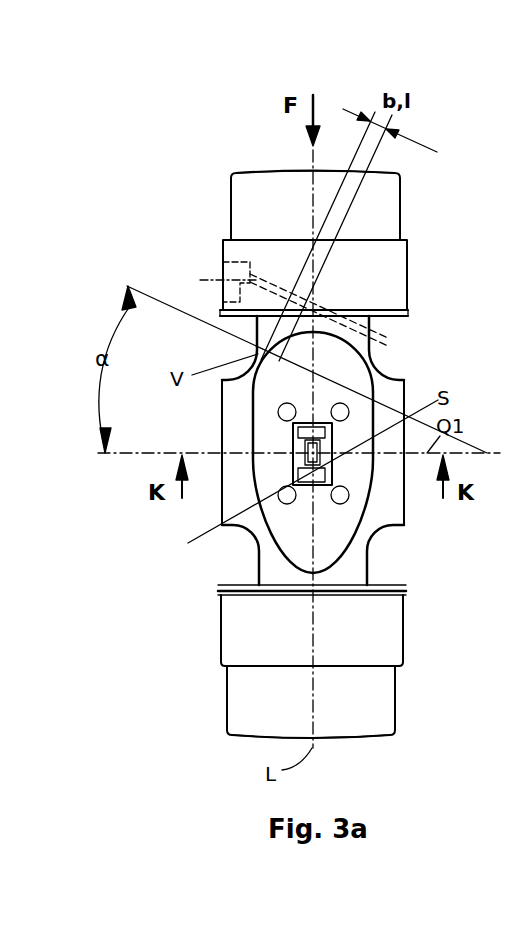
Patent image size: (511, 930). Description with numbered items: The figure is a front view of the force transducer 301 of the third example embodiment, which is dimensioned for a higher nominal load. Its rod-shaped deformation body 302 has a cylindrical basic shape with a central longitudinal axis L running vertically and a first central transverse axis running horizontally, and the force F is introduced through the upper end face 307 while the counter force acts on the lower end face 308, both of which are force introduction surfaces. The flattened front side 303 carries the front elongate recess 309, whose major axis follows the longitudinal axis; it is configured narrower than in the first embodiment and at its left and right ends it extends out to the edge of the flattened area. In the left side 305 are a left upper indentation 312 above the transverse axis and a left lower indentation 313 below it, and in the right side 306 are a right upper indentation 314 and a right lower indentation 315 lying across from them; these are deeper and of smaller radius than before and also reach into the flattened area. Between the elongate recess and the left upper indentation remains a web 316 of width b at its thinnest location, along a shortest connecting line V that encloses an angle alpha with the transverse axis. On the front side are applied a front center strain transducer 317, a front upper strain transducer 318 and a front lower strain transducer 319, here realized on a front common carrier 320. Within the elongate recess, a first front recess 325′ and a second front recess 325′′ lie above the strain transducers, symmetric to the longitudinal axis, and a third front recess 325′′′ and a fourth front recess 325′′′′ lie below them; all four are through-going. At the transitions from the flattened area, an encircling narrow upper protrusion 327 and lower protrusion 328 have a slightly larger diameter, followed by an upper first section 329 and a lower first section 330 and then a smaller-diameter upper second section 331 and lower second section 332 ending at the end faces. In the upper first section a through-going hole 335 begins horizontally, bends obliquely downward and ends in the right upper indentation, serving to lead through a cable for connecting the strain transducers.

The force transducer 301 is at (137, 151).
The deformation body 302 is at (224, 597).
The front side 303 is at (242, 632).
The left side 305 is at (222, 488).
The right side 306 is at (404, 487).
The upper end face 307 is at (288, 170).
The lower end face 308 is at (337, 740).
The front elongate recess 309 is at (383, 557).
The left upper indentation 312 is at (258, 352).
The left lower indentation 313 is at (280, 537).
The right upper indentation 314 is at (384, 350).
The right lower indentation 315 is at (400, 590).
The web 316 is at (257, 348).
The front center strain transducer 317 is at (293, 478).
The front upper strain transducer 318 is at (295, 428).
The front lower strain transducer 319 is at (425, 548).
The front common carrier 320 is at (373, 527).
The first front recess 325′ is at (288, 412).
The second front recess 325′′ is at (340, 412).
The third front recess 325′′′ is at (287, 495).
The fourth front recess 325′′′′ is at (340, 495).
The upper protrusion 327 is at (405, 316).
The lower protrusion 328 is at (405, 597).
The upper first section 329 is at (385, 283).
The lower first section 330 is at (393, 660).
The upper second section 331 is at (367, 207).
The lower second section 332 is at (368, 715).
The through-going hole 335 is at (240, 292).